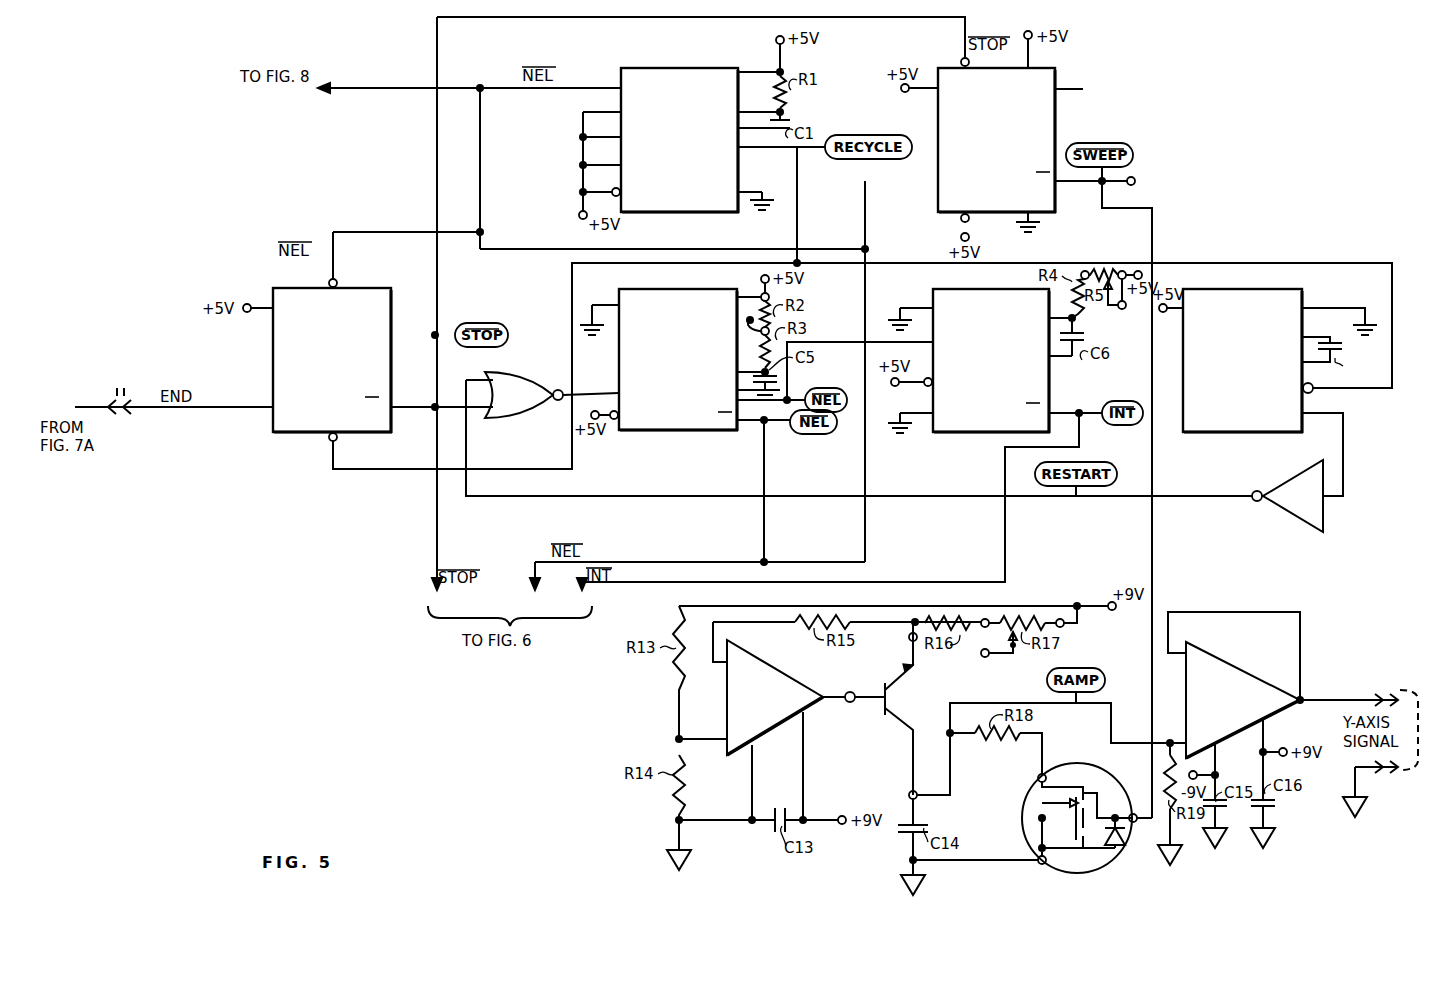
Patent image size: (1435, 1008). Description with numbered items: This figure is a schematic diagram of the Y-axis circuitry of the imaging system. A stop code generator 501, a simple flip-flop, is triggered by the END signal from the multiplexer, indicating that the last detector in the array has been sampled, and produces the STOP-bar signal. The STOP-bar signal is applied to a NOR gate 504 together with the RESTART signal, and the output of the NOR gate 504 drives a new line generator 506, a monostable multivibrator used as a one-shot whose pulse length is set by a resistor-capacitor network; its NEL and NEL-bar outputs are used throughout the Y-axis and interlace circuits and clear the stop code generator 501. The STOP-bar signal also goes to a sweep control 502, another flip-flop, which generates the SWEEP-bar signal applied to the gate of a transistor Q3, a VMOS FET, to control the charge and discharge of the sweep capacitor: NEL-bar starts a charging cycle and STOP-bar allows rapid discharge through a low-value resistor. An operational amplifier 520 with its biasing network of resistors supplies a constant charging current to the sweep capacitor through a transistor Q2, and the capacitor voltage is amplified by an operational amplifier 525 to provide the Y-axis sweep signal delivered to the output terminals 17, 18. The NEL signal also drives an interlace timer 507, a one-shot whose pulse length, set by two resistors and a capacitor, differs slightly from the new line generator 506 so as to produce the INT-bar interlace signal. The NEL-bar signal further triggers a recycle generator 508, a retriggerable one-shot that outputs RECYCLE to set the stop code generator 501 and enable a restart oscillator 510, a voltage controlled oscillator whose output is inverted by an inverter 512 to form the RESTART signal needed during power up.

The stop code generator 501 is at (360, 288).
The sweep control 502 is at (1052, 68).
The NOR gate 504 is at (508, 416).
The new line generator 506 is at (675, 289).
The interlace timer 507 is at (993, 296).
The recycle generator 508 is at (690, 68).
The restart oscillator 510 is at (1225, 295).
The inverter 512 is at (1292, 480).
The operational amplifier 520 is at (782, 667).
The operational amplifier 525 is at (1237, 667).
The transistor Q2 is at (912, 715).
The transistor Q3 is at (1024, 808).
The Y-axis signal output terminal 17 is at (1388, 688).
The ground terminal 18 is at (1388, 778).